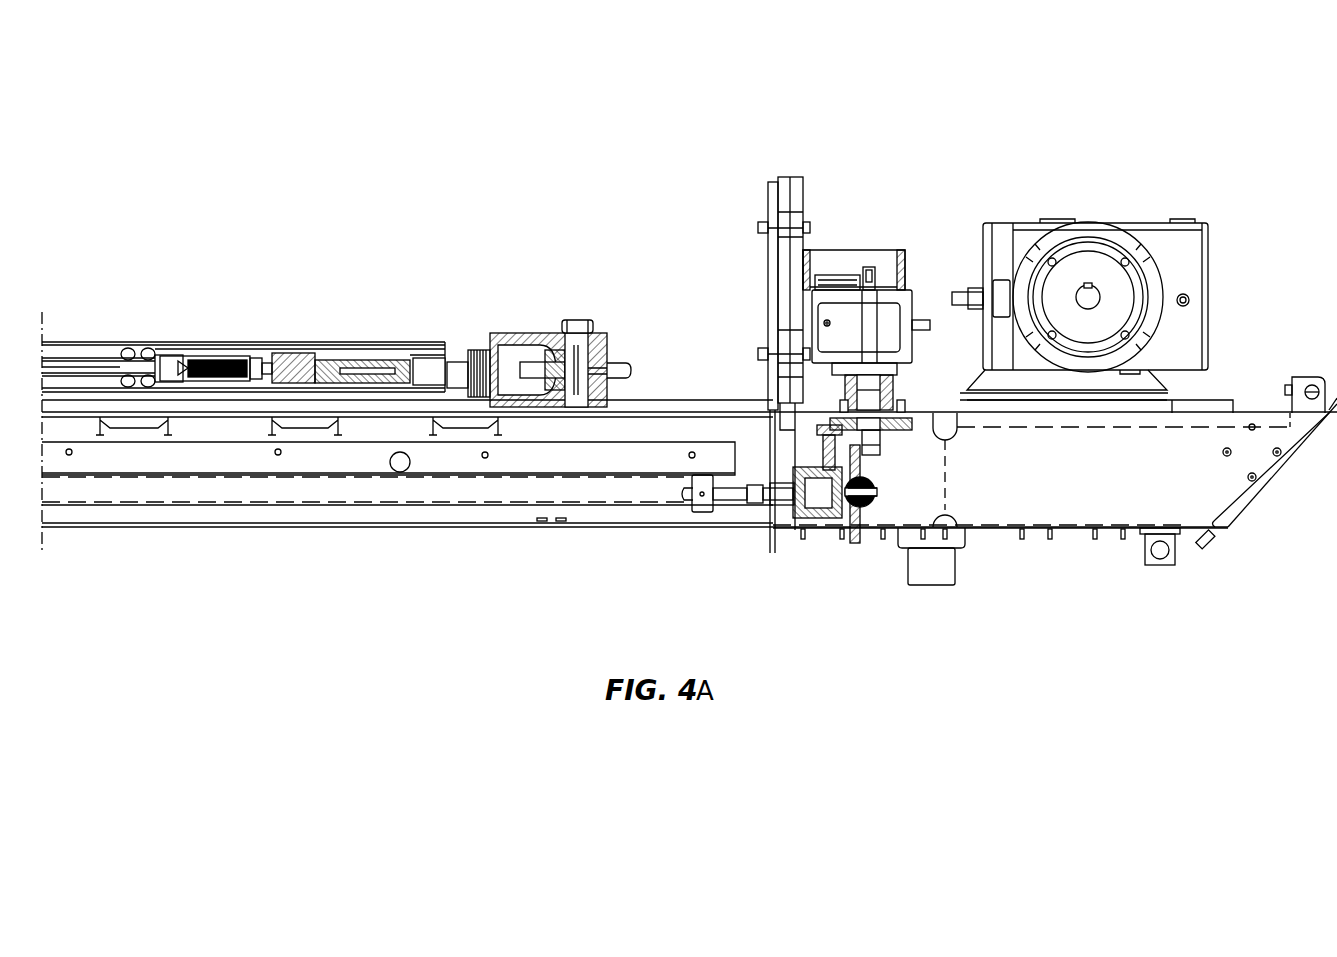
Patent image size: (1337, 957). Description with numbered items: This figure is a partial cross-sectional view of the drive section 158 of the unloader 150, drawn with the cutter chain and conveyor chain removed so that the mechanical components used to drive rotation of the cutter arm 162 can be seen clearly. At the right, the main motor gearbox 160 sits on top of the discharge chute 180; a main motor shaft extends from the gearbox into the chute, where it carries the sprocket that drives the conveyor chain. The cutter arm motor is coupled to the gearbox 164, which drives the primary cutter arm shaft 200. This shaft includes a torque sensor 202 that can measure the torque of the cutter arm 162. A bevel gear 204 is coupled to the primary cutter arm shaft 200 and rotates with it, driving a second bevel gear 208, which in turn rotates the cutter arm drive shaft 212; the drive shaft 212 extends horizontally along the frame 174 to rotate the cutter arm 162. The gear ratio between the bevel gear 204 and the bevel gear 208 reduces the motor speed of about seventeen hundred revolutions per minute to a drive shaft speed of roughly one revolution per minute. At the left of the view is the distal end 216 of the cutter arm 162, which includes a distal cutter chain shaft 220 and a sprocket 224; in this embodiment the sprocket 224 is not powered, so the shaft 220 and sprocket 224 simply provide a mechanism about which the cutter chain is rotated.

The unloader 150 is at (384, 73).
The drive section 158 is at (975, 163).
The main motor gearbox 160 is at (1168, 238).
The cutter arm 162 is at (278, 342).
The gearbox 164 is at (893, 315).
The frame 174 is at (662, 410).
The discharge chute 180 is at (1050, 510).
The primary cutter arm shaft 200 is at (872, 340).
The torque sensor 202 is at (897, 372).
The bevel gear 204 is at (875, 448).
The second bevel gear 208 is at (863, 513).
The cutter arm drive shaft 212 is at (735, 497).
The distal end 216 is at (537, 306).
The distal cutter chain shaft 220 is at (580, 317).
The sprocket 224 is at (620, 362).